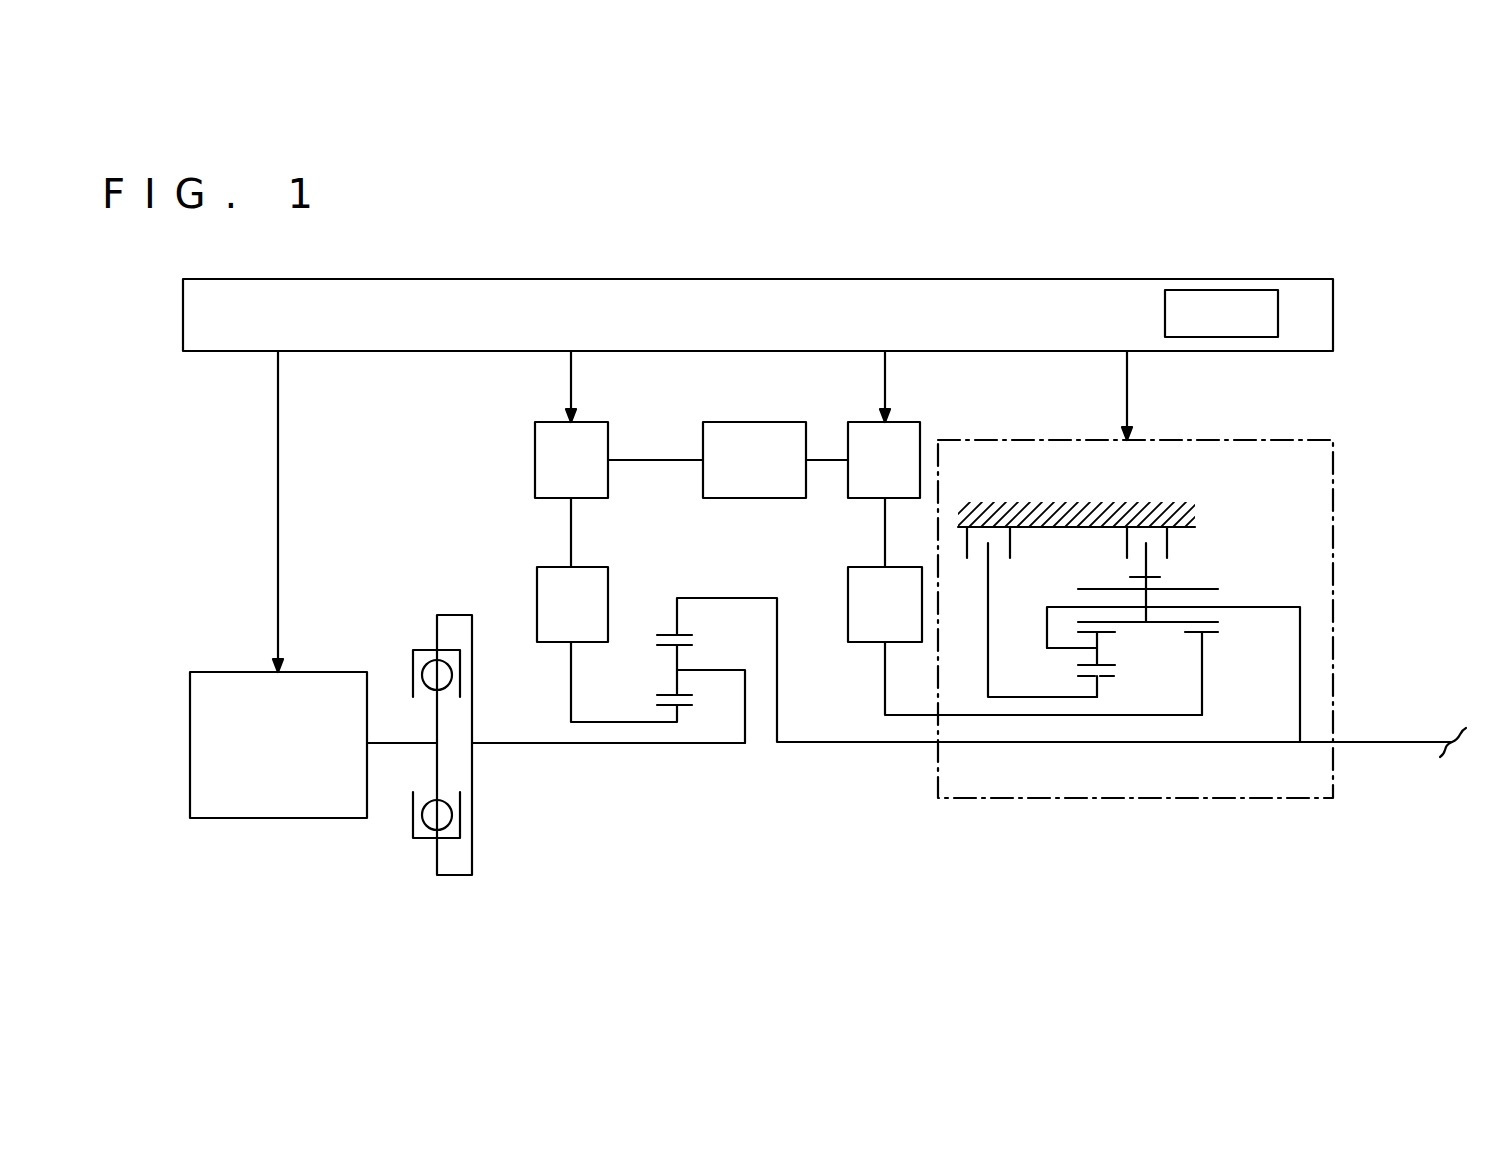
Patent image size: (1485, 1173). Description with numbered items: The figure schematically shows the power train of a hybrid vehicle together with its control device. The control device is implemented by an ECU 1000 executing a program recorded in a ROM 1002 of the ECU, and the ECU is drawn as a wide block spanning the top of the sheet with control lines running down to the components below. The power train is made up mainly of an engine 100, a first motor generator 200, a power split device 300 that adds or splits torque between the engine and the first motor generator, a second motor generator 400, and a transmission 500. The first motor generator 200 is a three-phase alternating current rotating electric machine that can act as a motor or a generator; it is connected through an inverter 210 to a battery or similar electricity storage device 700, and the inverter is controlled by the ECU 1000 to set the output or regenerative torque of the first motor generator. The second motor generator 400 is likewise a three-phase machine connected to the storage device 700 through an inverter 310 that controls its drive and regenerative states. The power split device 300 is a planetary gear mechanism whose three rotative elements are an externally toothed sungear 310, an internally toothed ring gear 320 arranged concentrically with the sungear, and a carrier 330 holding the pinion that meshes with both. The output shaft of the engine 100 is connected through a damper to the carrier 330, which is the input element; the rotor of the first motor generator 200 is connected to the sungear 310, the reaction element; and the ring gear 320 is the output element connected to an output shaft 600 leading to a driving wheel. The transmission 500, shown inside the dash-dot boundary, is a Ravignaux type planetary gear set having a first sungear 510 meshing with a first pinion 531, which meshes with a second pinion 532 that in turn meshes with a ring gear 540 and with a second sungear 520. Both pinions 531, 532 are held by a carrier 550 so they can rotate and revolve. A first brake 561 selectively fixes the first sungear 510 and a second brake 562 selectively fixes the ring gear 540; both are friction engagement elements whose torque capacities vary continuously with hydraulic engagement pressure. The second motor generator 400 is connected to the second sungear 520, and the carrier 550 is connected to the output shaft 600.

The engine 100 is at (295, 820).
The MG (1) 200 is at (537, 592).
The inverter 210 is at (592, 422).
The power split device 300 is at (655, 752).
The sungear (S) / inverter 310 is at (905, 422).
The ring gear (R) 320 is at (668, 633).
The carrier (C) 330 is at (707, 670).
The MG (2) 400 is at (866, 645).
The transmission 500 is at (1333, 462).
The first sungear (S1) 510 is at (1110, 680).
The second sungear (S2) 520 is at (1212, 632).
The first pinion 531 is at (1105, 665).
The second pinion 532 is at (1103, 589).
The ring gear (R) 540 is at (1162, 578).
The carrier (C) 550 is at (1260, 607).
The B1 brake 561 is at (1003, 527).
The B2 brake 562 is at (1157, 527).
The output shaft 600 is at (1388, 745).
The electricity storage device 700 is at (750, 422).
The ECU 1000 is at (745, 279).
The ROM 1002 is at (1218, 290).